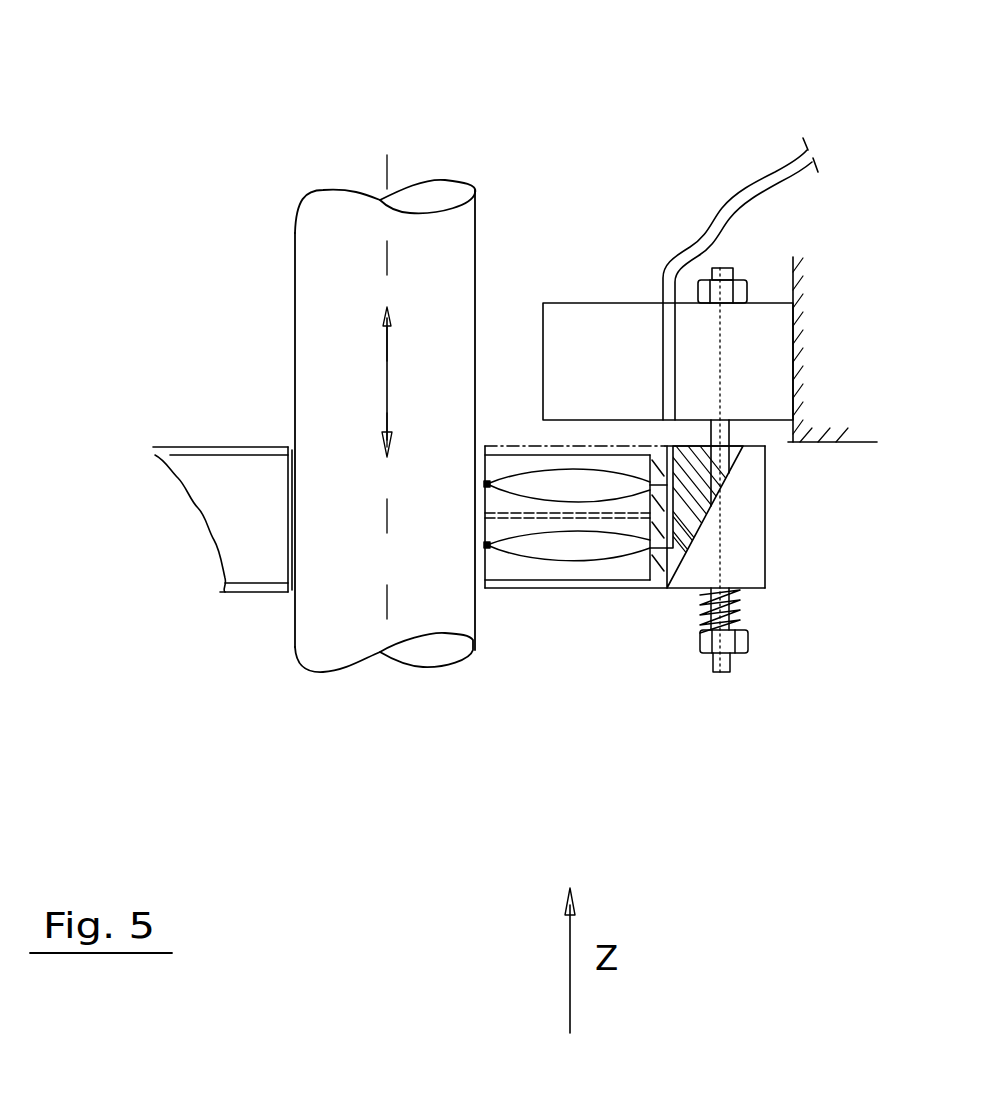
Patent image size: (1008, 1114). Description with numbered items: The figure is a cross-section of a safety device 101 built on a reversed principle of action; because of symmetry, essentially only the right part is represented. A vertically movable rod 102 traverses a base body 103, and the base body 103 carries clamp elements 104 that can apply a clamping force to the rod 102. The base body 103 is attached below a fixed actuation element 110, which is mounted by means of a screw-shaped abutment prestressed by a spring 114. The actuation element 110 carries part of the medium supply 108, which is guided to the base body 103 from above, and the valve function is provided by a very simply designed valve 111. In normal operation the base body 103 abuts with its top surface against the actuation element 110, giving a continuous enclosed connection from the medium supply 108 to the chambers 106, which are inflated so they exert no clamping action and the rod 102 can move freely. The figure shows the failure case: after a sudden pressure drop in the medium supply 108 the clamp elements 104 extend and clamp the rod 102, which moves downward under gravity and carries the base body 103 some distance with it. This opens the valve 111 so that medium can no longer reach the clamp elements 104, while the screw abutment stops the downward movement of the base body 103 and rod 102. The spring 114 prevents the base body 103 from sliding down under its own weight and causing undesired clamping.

The safety device 101 is at (175, 558).
The rod 102 is at (313, 287).
The base body 103 is at (755, 570).
The clamp elements 104 is at (779, 484).
The chambers 106 is at (557, 490).
The medium supply 108 is at (765, 170).
The actuation element 110 is at (772, 340).
The valve 111 is at (669, 435).
The spring 114 is at (702, 617).